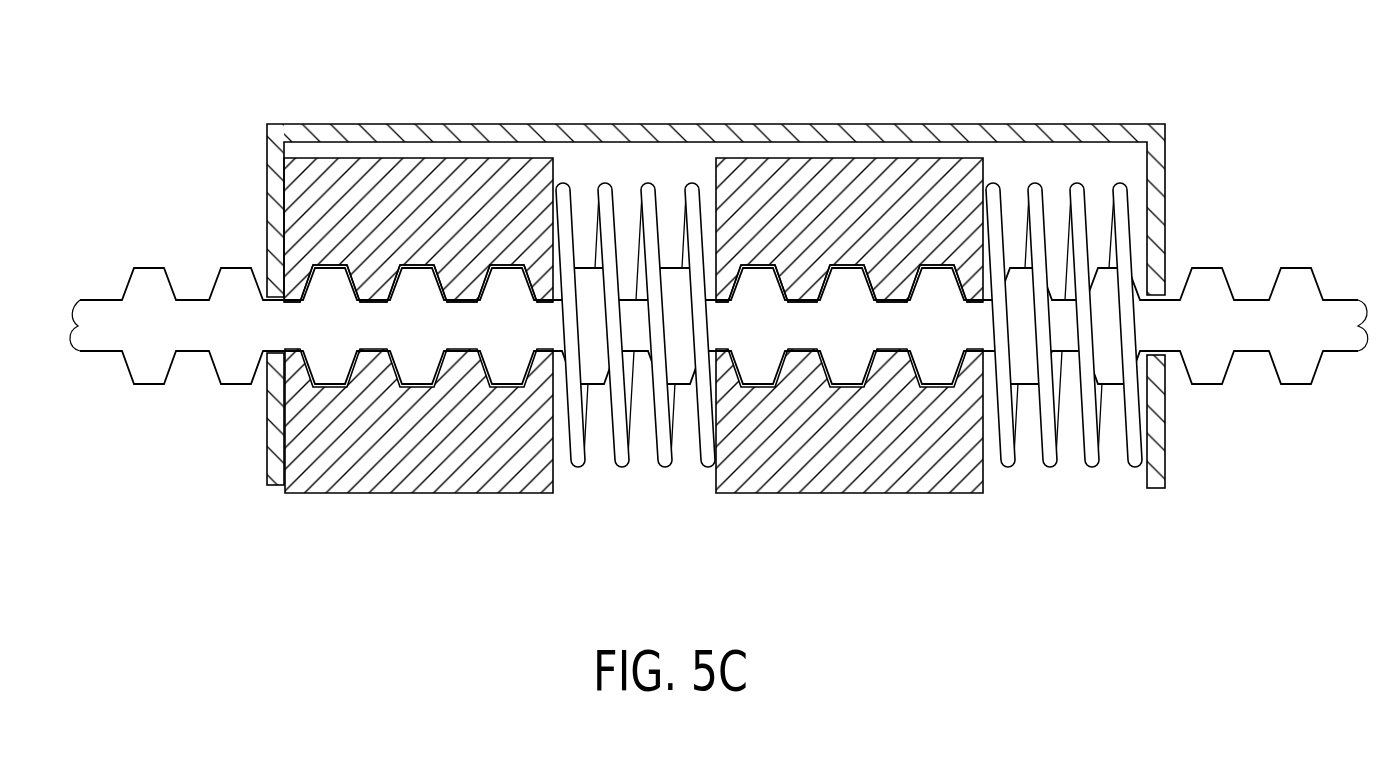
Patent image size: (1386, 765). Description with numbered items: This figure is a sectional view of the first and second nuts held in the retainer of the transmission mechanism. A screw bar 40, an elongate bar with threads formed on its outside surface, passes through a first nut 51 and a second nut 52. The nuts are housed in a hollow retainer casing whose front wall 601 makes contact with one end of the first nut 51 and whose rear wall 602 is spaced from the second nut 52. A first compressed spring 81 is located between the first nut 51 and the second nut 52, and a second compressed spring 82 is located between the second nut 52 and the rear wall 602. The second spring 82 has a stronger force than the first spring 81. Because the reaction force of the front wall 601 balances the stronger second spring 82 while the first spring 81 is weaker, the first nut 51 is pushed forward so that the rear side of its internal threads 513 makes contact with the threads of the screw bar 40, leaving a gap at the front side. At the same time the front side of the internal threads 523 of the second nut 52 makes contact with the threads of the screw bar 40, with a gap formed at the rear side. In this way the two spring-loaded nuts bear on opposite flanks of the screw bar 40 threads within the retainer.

The screw bar 40 is at (158, 303).
The first nut 51 is at (362, 478).
The second nut 52 is at (850, 474).
The internal threads of the first nut 513 is at (463, 277).
The internal threads of the second nut 523 is at (848, 192).
The front wall 601 is at (275, 192).
The rear wall 602 is at (1162, 173).
The first spring 81 is at (620, 470).
The second spring 82 is at (1050, 472).